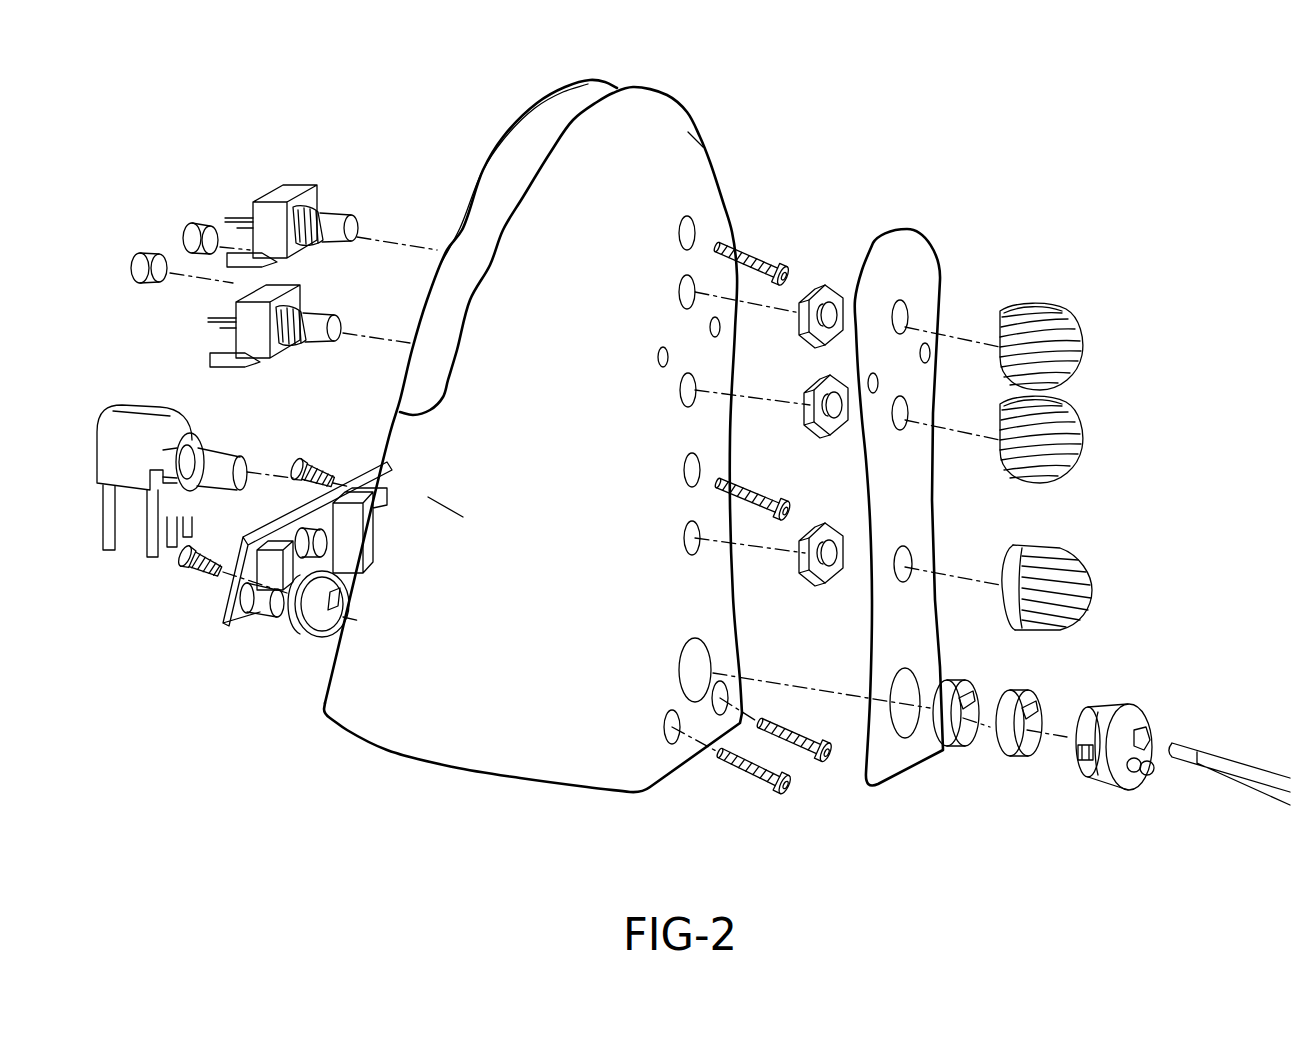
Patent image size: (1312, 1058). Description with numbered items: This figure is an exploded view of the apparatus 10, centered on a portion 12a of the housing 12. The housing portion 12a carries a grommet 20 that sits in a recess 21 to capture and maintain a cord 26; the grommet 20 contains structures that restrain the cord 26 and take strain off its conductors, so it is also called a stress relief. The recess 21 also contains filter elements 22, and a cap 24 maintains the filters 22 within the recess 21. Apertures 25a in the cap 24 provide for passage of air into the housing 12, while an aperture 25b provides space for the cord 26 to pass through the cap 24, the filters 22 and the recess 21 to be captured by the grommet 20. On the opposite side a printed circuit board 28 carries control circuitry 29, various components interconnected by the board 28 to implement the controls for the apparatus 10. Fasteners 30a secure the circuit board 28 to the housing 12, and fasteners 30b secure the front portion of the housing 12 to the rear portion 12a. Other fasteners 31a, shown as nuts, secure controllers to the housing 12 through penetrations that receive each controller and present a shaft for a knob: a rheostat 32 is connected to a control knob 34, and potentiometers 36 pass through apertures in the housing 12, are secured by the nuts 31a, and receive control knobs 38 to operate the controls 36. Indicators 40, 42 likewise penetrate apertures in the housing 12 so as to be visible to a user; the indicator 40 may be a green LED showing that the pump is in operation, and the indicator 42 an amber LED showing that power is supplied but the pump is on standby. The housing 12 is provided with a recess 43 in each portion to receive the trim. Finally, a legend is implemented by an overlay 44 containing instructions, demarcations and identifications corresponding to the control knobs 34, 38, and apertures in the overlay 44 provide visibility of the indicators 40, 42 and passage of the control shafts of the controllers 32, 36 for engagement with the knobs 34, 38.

The apparatus 10 is at (856, 144).
The housing 12 is at (445, 783).
The portion of the housing 12a is at (520, 671).
The grommet 20 is at (320, 628).
The recess 21 is at (700, 663).
The filter elements 22 is at (963, 740).
The cap 24 is at (1103, 765).
The apertures 25a is at (1152, 770).
The aperture 25b is at (1143, 740).
The cord 26 is at (1218, 758).
The printed circuit board 28 is at (237, 615).
The control circuitry 29 is at (262, 623).
The fasteners 30a is at (305, 465).
The fasteners 30b is at (750, 250).
The fasteners 31a is at (810, 325).
The rheostat 32 is at (182, 427).
The control knob 34 is at (1082, 602).
The potentiometers 36 is at (290, 192).
The control knobs 38 is at (1065, 363).
The indicator 40 is at (145, 277).
The indicator 42 is at (194, 225).
The recess 43 is at (545, 132).
The overlay 44 is at (922, 270).